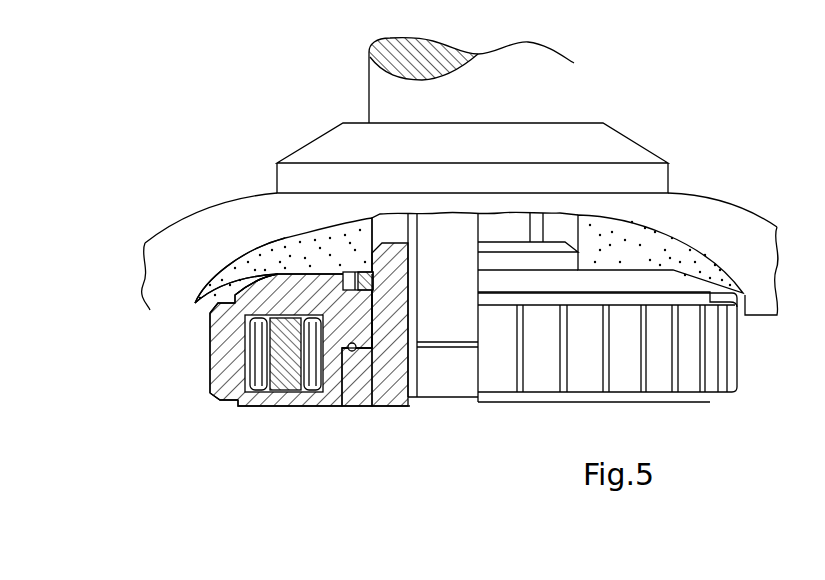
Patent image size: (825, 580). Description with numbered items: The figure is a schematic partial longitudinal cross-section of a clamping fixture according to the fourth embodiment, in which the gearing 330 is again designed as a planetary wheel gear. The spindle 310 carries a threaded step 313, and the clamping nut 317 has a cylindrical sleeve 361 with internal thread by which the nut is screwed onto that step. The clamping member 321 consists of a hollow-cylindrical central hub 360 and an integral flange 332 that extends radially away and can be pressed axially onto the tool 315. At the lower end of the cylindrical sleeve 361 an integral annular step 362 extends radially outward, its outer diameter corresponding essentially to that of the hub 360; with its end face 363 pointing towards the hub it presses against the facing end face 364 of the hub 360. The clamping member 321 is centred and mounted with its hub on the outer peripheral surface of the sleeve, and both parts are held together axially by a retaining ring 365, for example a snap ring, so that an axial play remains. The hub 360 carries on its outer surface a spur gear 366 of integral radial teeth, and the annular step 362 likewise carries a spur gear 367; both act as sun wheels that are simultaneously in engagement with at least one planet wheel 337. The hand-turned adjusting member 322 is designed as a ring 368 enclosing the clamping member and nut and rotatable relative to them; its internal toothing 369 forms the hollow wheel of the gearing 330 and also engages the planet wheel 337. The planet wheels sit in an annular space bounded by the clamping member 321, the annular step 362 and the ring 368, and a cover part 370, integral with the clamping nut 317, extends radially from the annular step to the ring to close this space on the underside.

The spindle 310 is at (571, 89).
The threaded step 313 is at (457, 385).
The tool 315 is at (663, 243).
The clamping nut 317 is at (397, 400).
The clamping member 321 is at (255, 297).
The adjusting member 322 is at (200, 373).
The gearing 330 is at (235, 401).
The flange 332 is at (295, 290).
The planet wheel 337 is at (210, 353).
The hub 360 is at (277, 193).
The cylindrical sleeve 361 is at (372, 243).
The annular step 362 is at (358, 352).
The end face 363 is at (372, 352).
The end face 364 is at (352, 352).
The retaining ring 365 is at (345, 272).
The spur gear 366 is at (283, 282).
The spur gear 367 is at (295, 405).
The ring 368 is at (208, 377).
The internal toothing 369 is at (250, 331).
The cover part 370 is at (227, 414).